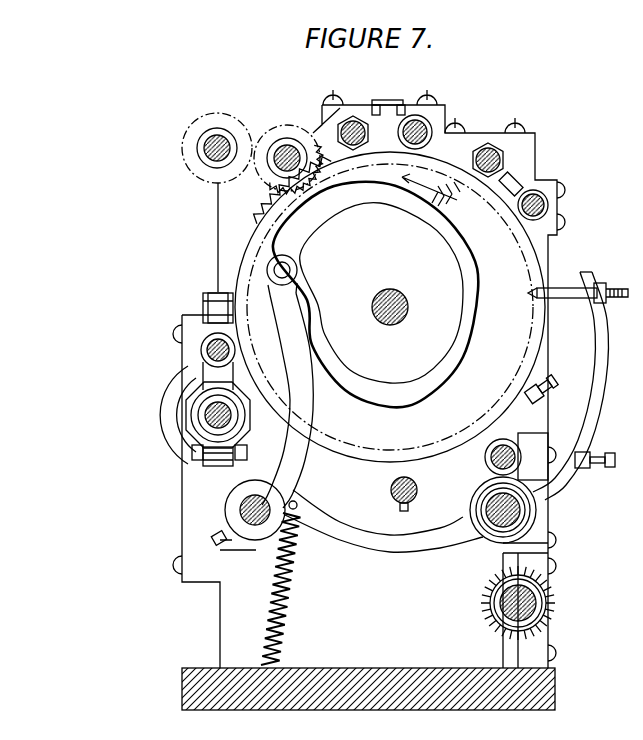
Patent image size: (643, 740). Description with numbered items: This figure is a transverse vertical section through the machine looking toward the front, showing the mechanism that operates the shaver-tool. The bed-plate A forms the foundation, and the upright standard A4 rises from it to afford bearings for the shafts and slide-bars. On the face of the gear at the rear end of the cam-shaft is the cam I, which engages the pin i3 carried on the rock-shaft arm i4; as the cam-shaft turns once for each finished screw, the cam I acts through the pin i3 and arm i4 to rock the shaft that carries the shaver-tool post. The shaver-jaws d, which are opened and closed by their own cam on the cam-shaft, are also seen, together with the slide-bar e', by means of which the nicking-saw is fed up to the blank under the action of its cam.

The cam I is at (375, 295).
The pin i3 is at (282, 270).
The rock-shaft arm i4 is at (269, 411).
The shaver-jaws d is at (211, 379).
The slide-bar e' is at (413, 494).
The upright standard A4 is at (400, 379).
The bed-plate A is at (368, 689).